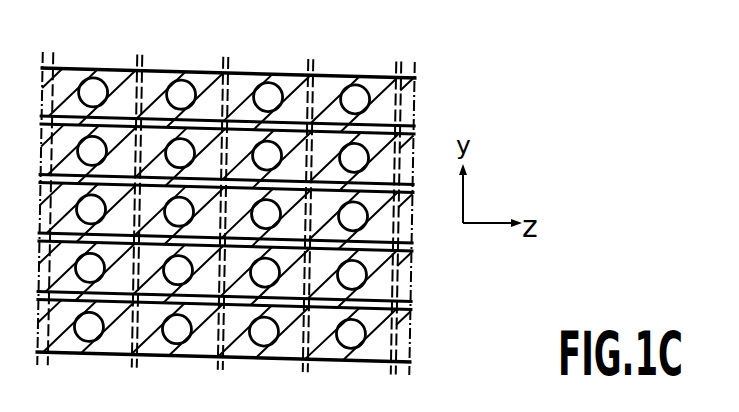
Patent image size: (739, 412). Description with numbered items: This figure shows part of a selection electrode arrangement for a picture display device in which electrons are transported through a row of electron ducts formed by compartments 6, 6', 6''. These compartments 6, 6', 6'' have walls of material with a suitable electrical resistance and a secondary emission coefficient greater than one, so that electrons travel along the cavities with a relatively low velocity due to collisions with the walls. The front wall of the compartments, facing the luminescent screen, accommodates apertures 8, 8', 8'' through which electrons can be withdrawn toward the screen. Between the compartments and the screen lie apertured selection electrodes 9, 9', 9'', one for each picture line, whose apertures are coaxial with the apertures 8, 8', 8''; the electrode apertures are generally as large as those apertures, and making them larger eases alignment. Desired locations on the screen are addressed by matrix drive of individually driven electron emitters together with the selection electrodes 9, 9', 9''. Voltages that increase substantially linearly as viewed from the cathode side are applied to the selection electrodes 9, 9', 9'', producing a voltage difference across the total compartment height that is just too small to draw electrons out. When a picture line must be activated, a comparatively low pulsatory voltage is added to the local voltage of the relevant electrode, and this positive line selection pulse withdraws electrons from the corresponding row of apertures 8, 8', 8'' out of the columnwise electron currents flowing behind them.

The compartment 6 is at (91, 184).
The compartment 6' is at (179, 185).
The compartment 6'' is at (266, 186).
The aperture 8 is at (390, 226).
The aperture 8' is at (391, 282).
The aperture 8'' is at (393, 340).
The selection electrode 9 is at (241, 217).
The selection electrode 9' is at (257, 275).
The selection electrode 9'' is at (259, 331).